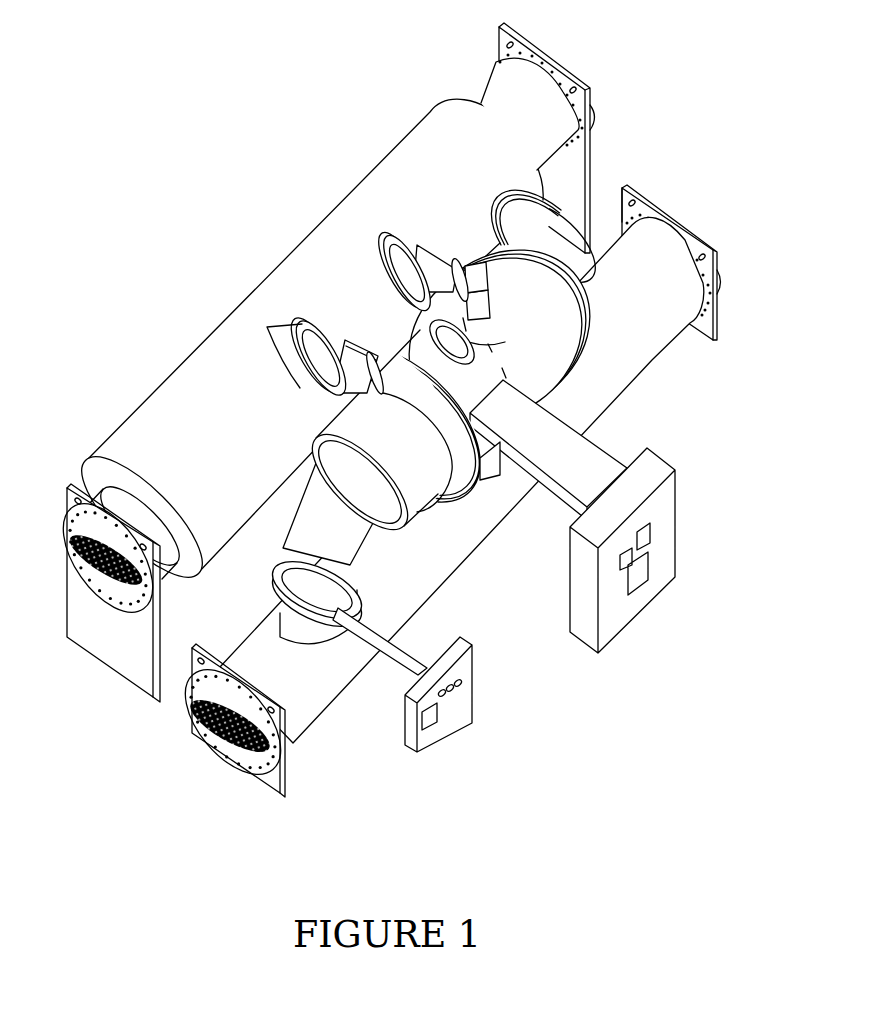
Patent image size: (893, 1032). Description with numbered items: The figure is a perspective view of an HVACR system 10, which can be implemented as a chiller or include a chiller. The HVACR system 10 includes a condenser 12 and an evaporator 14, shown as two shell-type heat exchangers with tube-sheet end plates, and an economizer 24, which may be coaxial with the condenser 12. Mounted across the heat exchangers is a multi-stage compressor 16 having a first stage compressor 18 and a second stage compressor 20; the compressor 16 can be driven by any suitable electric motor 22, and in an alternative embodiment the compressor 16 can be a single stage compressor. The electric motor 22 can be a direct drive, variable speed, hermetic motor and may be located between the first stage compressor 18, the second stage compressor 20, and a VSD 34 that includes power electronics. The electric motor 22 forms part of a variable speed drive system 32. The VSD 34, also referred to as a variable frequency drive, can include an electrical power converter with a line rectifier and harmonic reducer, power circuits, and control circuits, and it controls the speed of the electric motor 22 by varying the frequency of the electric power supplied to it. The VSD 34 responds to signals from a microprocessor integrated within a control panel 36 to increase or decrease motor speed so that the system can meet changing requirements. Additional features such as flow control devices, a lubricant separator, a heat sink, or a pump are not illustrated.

The HVACR system 10 is at (235, 193).
The condenser 12 is at (330, 308).
The evaporator 14 is at (317, 698).
The multi-stage compressor 16 is at (473, 510).
The first stage compressor 18 is at (420, 498).
The second stage compressor 20 is at (570, 342).
The electric motor 22 is at (508, 428).
The economizer 24 is at (233, 318).
The variable speed drive system 32 is at (630, 435).
The variable speed drive 34 is at (638, 596).
The control panel 36 is at (452, 703).